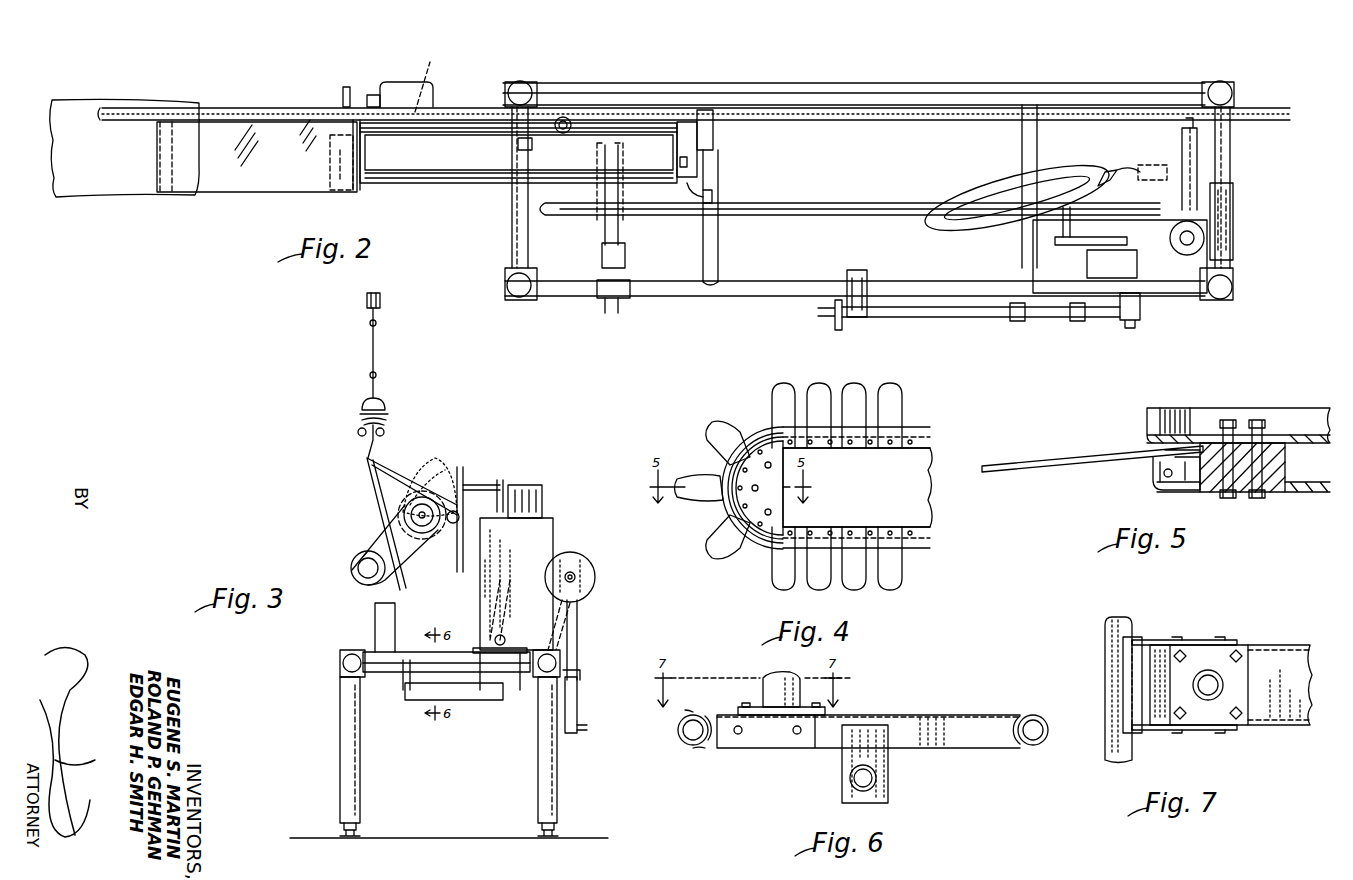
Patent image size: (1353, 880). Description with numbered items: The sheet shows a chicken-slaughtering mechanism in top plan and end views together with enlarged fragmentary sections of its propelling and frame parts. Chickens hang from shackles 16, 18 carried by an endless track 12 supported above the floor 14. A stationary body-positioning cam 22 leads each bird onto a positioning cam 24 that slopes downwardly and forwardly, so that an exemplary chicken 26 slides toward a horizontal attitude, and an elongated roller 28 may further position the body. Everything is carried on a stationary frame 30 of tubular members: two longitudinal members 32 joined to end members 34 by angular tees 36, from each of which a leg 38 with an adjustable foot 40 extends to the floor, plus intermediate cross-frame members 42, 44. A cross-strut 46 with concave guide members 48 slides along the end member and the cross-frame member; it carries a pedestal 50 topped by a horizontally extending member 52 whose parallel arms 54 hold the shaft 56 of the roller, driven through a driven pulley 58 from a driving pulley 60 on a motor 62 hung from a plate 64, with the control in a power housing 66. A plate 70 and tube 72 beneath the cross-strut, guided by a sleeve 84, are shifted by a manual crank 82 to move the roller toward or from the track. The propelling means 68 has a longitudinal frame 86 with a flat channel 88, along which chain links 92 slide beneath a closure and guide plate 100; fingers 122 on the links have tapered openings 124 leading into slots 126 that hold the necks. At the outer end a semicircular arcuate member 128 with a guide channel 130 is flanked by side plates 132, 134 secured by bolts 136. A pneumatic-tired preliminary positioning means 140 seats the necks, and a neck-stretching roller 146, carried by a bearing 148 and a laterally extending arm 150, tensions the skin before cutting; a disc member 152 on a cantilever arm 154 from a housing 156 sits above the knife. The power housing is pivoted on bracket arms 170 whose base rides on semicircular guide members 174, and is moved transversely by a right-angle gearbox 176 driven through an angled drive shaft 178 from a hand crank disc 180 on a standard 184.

In FIG. 2, the track 12 is at (243, 108).
In FIG. 3, the track 12 is at (367, 300).
In FIG. 3, the floor 14 is at (452, 838).
In FIG. 3, the shackles 16 is at (373, 350).
In FIG. 3, the shackles 18 is at (355, 440).
In FIG. 2, the body-positioning cam 22 is at (128, 175).
In FIG. 2, the positioning cam 24 is at (258, 175).
In FIG. 3, the positioning cam 24 is at (368, 480).
In FIG. 3, the chicken 26 is at (463, 470).
In FIG. 2, the roller 28 is at (407, 170).
In FIG. 3, the roller 28 is at (420, 560).
In FIG. 2, the frame 30 is at (748, 307).
In FIG. 2, the longitudinal members 32 is at (903, 95).
In FIG. 2, the end members 34 is at (512, 213).
In FIG. 3, the end members 34 is at (425, 683).
In FIG. 6, the end members 34 is at (680, 738).
In FIG. 7, the end members 34 is at (1125, 617).
In FIG. 2, the angular tees 36 is at (508, 82).
In FIG. 3, the angular tees 36 is at (340, 672).
In FIG. 3, the leg 38 is at (340, 760).
In FIG. 3, the adjustable feet 40 is at (360, 835).
In FIG. 2, the intermediate cross-frame member 42 is at (718, 165).
In FIG. 6, the intermediate cross-frame member 42 is at (1043, 718).
In FIG. 2, the intermediate cross-frame member 44 is at (1037, 150).
In FIG. 2, the cross-strut 46 is at (690, 122).
In FIG. 3, the cross-strut 46 is at (400, 652).
In FIG. 6, the cross-strut 46 is at (948, 715).
In FIG. 7, the cross-strut 46 is at (1280, 645).
In FIG. 2, the concave guide members 48 is at (520, 150).
In FIG. 3, the concave guide members 48 is at (395, 672).
In FIG. 6, the concave guide members 48 is at (705, 745).
In FIG. 7, the concave guide members 48 is at (1123, 680).
In FIG. 2, the pedestal 50 is at (566, 120).
In FIG. 3, the pedestal 50 is at (375, 620).
In FIG. 6, the pedestal 50 is at (763, 690).
In FIG. 7, the pedestal 50 is at (1222, 680).
In FIG. 2, the horizontally extending member 52 is at (445, 122).
In FIG. 3, the horizontally extending member 52 is at (404, 515).
In FIG. 2, the parallel arms 54 is at (358, 190).
In FIG. 3, the parallel arms 54 is at (398, 510).
In FIG. 2, the shaft 56 is at (687, 162).
In FIG. 3, the shaft 56 is at (430, 465).
In FIG. 2, the driven gear or pulley 58 is at (330, 175).
In FIG. 3, the driven gear or pulley 58 is at (450, 523).
In FIG. 2, the driving gear or pulley 60 is at (343, 92).
In FIG. 3, the driving gear or pulley 60 is at (351, 568).
In FIG. 2, the motor 62 is at (400, 82).
In FIG. 3, the motor 62 is at (360, 585).
In FIG. 2, the plate 64 is at (427, 79).
In FIG. 3, the plate 64 is at (398, 580).
In FIG. 2, the power housing 66 is at (1158, 278).
In FIG. 3, the power housing 66 is at (553, 535).
In FIG. 2, the propelling means 68 is at (845, 225).
In FIG. 3, the propelling means 68 is at (464, 568).
In FIG. 4, the propelling means 68 is at (930, 430).
In FIG. 2, the plate 70 is at (597, 150).
In FIG. 6, the plate 70 is at (842, 760).
In FIG. 2, the tube 72 is at (605, 225).
In FIG. 6, the tube 72 is at (852, 788).
In FIG. 2, the crank 82 is at (605, 313).
In FIG. 3, the crank 82 is at (577, 708).
In FIG. 2, the guide sleeve 84 is at (602, 258).
In FIG. 2, the frame 86 is at (780, 203).
In FIG. 4, the frame 86 is at (915, 480).
In FIG. 5, the frame 86 is at (1304, 498).
In FIG. 5, the flat channel 88 is at (1320, 492).
In FIG. 4, the links 92 is at (822, 445).
In FIG. 5, the links 92 is at (1192, 485).
In FIG. 5, the closure and guide plate 100 is at (1308, 433).
In FIG. 4, the fingers 122 is at (775, 392).
In FIG. 5, the fingers 122 is at (1080, 452).
In FIG. 4, the tapered openings 124 is at (850, 385).
In FIG. 4, the slots 126 is at (803, 410).
In FIG. 4, the arcuate member 128 is at (750, 500).
In FIG. 5, the arcuate member 128 is at (1285, 465).
In FIG. 5, the arcuate guide channel 130 is at (1153, 470).
In FIG. 5, the side plate member 132 is at (1160, 492).
In FIG. 5, the side plate member 134 is at (1190, 425).
In FIG. 4, the bolts 136 is at (762, 520).
In FIG. 5, the bolts 136 is at (1228, 420).
In FIG. 2, the preliminary positioning means 140 is at (990, 220).
In FIG. 2, the neck-stretching roller 146 is at (1160, 165).
In FIG. 2, the bearing 148 is at (705, 203).
In FIG. 2, the laterally extending arm 150 is at (1204, 238).
In FIG. 2, the member 152 is at (1070, 220).
In FIG. 3, the member 152 is at (470, 485).
In FIG. 2, the cantilever arm 154 is at (1075, 245).
In FIG. 2, the housing 156 is at (1137, 262).
In FIG. 3, the housing 156 is at (542, 490).
In FIG. 3, the bracket arms 170 is at (495, 690).
In FIG. 3, the semicircular guide members 174 is at (480, 690).
In FIG. 2, the right-angle gearbox 176 is at (1133, 328).
In FIG. 2, the drive shaft 178 is at (1010, 317).
In FIG. 3, the drive shaft 178 is at (577, 650).
In FIG. 2, the hand crank disc 180 is at (838, 330).
In FIG. 3, the hand crank disc 180 is at (590, 590).
In FIG. 2, the standard 184 is at (867, 275).
In FIG. 3, the standard 184 is at (565, 625).